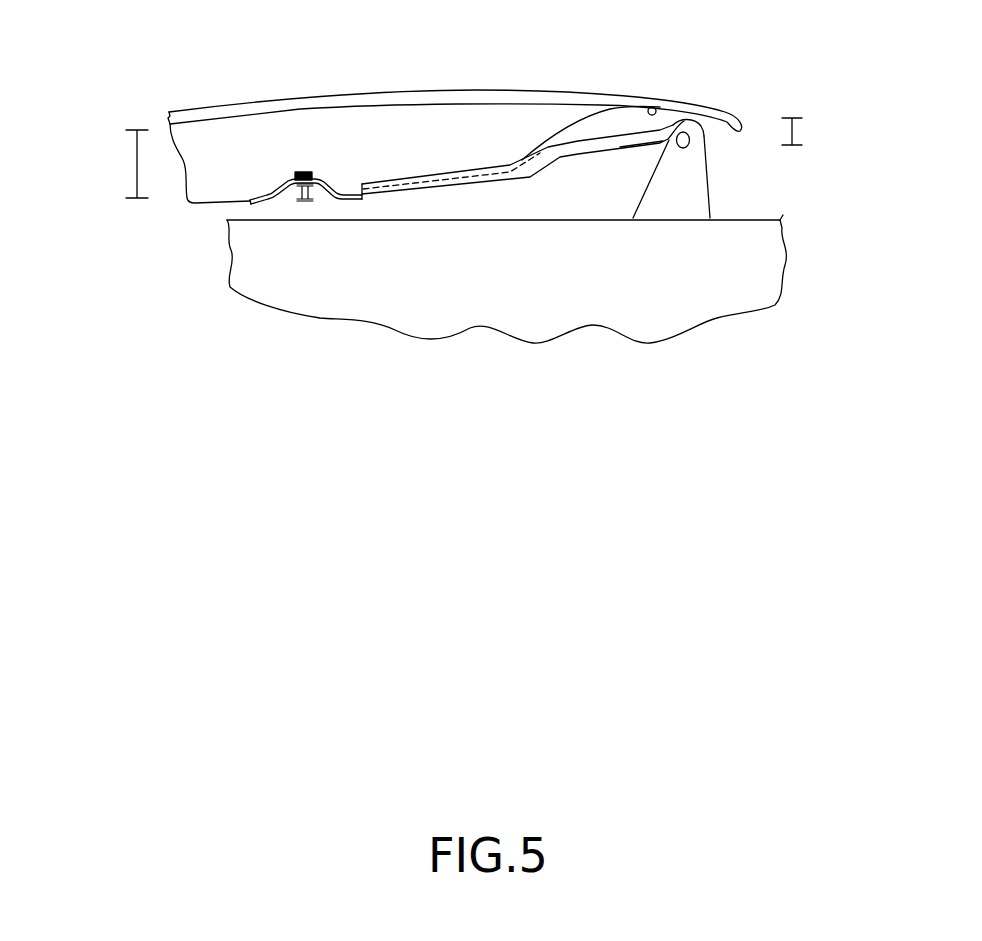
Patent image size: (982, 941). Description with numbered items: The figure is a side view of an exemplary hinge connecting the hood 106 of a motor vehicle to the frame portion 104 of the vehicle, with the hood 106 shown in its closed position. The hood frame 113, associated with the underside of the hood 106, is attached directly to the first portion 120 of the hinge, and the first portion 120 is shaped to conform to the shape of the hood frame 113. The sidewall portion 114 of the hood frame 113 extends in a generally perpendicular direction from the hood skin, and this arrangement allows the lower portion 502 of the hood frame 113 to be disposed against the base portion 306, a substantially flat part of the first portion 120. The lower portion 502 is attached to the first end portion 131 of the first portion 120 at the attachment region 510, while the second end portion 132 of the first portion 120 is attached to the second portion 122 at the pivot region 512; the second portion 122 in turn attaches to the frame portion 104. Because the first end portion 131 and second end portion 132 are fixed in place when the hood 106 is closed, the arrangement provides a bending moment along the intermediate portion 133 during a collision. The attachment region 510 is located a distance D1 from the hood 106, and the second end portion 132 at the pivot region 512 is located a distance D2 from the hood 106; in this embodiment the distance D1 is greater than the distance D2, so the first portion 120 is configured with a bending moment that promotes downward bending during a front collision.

The frame portion 104 is at (357, 305).
The hood 106 is at (320, 97).
The hood frame 113 is at (651, 106).
The sidewall portion 114 is at (573, 113).
The first portion 120 is at (503, 178).
The second portion 122 is at (703, 182).
The first end portion 131 is at (217, 218).
The second end portion 132 is at (688, 117).
The intermediate portion 133 is at (538, 190).
The base portion 306 is at (337, 198).
The lower portion 502 is at (438, 188).
The attachment region 510 is at (291, 173).
The pivot region 512 is at (662, 143).
The distance D1 is at (137, 170).
The distance D2 is at (792, 131).